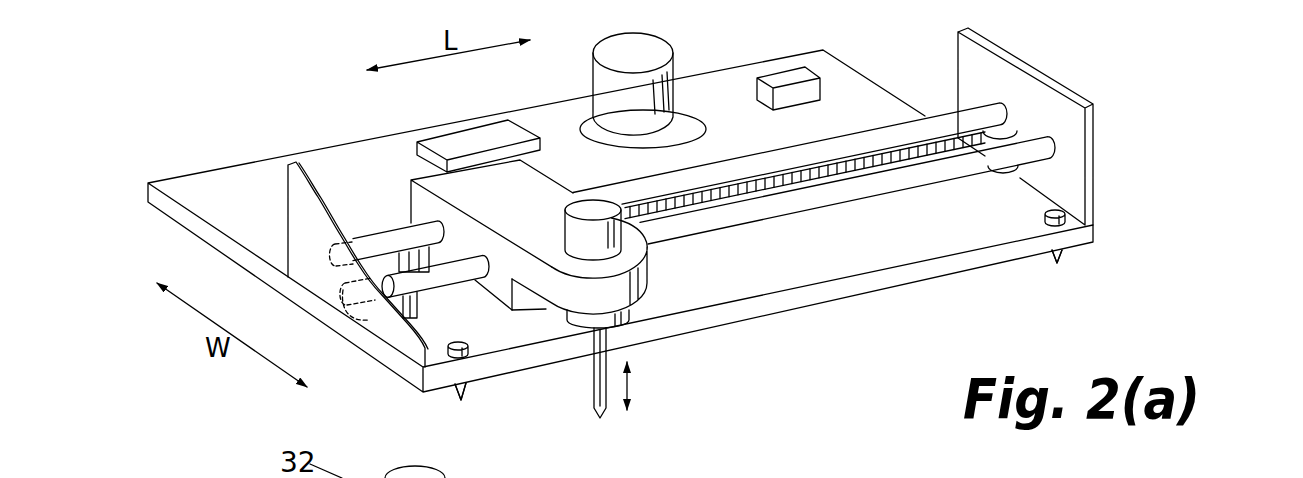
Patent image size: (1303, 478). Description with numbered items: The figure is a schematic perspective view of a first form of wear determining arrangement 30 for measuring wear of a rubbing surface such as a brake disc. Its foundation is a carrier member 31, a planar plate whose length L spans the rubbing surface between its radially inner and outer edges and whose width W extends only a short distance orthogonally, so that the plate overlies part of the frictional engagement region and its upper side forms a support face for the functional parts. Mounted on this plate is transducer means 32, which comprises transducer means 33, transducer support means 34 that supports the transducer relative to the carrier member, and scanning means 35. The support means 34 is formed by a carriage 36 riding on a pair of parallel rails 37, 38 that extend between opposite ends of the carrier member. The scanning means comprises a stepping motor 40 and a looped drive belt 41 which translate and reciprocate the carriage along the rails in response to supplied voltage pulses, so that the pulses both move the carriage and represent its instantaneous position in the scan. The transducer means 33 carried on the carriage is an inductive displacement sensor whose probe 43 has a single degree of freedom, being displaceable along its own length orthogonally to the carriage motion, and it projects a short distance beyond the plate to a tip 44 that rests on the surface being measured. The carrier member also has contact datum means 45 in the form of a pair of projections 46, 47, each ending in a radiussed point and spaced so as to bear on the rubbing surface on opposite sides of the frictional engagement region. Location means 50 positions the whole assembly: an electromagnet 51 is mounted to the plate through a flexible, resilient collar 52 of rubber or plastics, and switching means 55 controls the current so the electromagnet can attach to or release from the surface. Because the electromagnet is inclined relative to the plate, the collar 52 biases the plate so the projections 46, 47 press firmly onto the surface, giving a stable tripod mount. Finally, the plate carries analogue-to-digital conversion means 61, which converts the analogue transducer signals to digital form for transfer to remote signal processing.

The wear determining arrangement 30 is at (843, 303).
The carrier member 31 is at (885, 243).
The transducer means 32 is at (641, 323).
The transducer means 33 is at (655, 252).
The transducer support means 34 is at (483, 307).
The scanning means 35 is at (370, 220).
The carriage 36 is at (420, 203).
The rail 37 is at (910, 132).
The rail 38 is at (949, 163).
The stepping motor 40 is at (402, 304).
The looped drive belt 41 is at (769, 184).
The probe 43 is at (611, 394).
The tip 44 is at (598, 414).
The contact datum means 45 is at (470, 394).
The projection 46 is at (1060, 253).
The projection 47 is at (455, 394).
The location means 50 is at (608, 37).
The electromagnet 51 is at (668, 90).
The collar 52 is at (586, 118).
The switching means 55 is at (788, 76).
The analogue-to-digital conversion means 61 is at (465, 138).